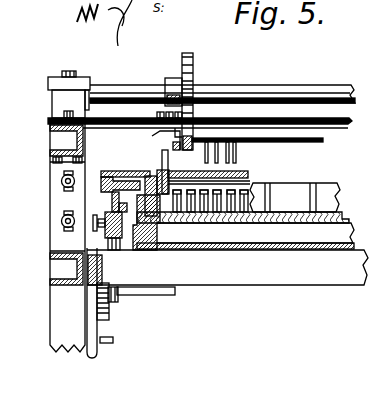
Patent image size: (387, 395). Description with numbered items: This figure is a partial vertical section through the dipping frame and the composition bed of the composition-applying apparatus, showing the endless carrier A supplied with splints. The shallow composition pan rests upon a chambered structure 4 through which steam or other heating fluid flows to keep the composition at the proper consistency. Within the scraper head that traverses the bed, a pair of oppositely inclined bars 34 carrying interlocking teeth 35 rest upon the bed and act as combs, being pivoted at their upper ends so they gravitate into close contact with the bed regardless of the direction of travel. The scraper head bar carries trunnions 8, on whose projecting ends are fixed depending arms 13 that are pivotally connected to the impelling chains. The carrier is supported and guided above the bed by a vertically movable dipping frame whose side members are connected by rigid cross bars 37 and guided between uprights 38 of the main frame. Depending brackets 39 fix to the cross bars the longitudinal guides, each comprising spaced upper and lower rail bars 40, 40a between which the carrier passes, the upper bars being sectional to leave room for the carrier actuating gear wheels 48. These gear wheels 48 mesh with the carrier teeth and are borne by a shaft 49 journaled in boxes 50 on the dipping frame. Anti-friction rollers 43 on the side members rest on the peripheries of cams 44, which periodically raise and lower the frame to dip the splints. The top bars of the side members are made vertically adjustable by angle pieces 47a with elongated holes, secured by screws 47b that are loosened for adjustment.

The chambered structure 4 is at (245, 230).
The trunnions 8 is at (151, 176).
The depending arms 13 is at (118, 171).
The oppositely inclined bars 34 is at (253, 181).
The interlocking teeth 35 is at (233, 212).
The cross bars 37 is at (337, 129).
The uprights 38 is at (67, 235).
The depending brackets 39 is at (154, 141).
The upper rail bars 40 is at (186, 132).
The lower rail bars 40a is at (191, 146).
The anti-friction rollers 43 is at (100, 261).
The cams 44 is at (108, 326).
The angle pieces 47a is at (60, 202).
The screws 47b is at (60, 223).
The gear wheels 48 is at (194, 58).
The shaft 49 is at (282, 89).
The boxes 50 is at (77, 77).
The endless carrier A is at (306, 143).